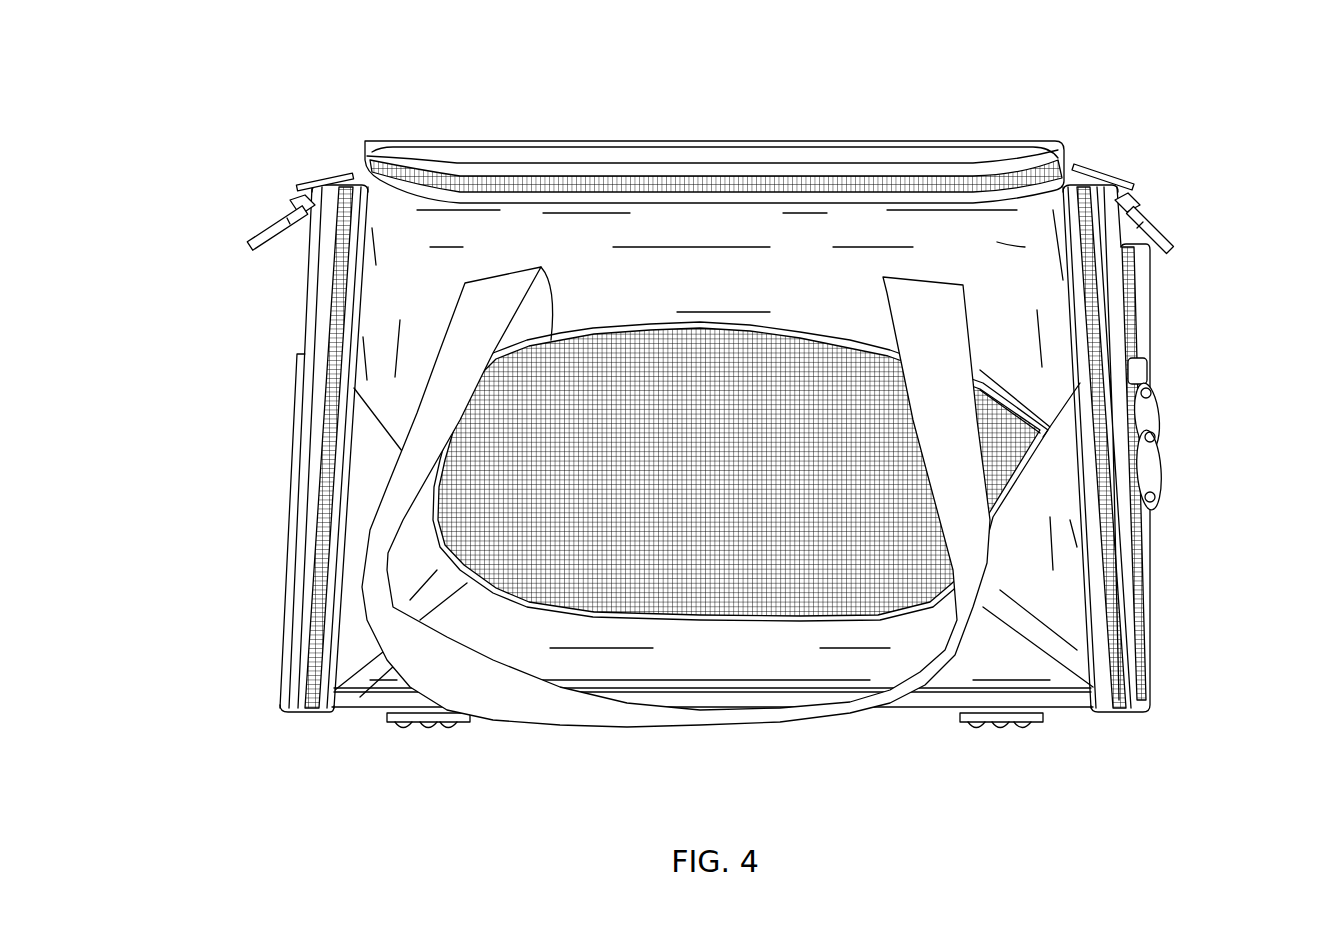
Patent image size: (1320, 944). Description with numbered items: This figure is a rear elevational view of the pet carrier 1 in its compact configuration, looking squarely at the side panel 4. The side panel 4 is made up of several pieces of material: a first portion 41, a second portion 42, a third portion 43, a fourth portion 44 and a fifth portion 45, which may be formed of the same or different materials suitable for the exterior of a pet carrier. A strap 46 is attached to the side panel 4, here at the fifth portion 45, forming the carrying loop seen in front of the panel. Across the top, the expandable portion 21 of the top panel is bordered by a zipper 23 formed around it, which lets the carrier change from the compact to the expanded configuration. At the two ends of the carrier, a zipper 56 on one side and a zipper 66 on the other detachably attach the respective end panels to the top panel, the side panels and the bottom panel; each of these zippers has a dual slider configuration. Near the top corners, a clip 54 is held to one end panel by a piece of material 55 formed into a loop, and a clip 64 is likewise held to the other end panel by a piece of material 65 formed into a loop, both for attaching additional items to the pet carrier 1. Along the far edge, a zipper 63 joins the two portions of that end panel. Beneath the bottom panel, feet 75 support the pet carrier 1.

The pet carrier 1 is at (803, 128).
The expandable portion 21 is at (921, 152).
The zipper 23 is at (1075, 168).
The zipper 66 is at (1095, 180).
The piece of material 65 is at (1138, 198).
The clip 64 is at (1168, 240).
The side panel 4 is at (1050, 315).
The zipper 63 is at (1150, 383).
The fourth portion 44 is at (1087, 597).
The feet 75 is at (410, 733).
The strap 46 is at (898, 700).
The third portion 43 is at (720, 655).
The second portion 42 is at (355, 637).
The first portion 41 is at (525, 487).
The fifth portion 45 is at (707, 238).
The zipper 56 is at (350, 172).
The piece of material 55 is at (288, 200).
The clip 54 is at (250, 250).